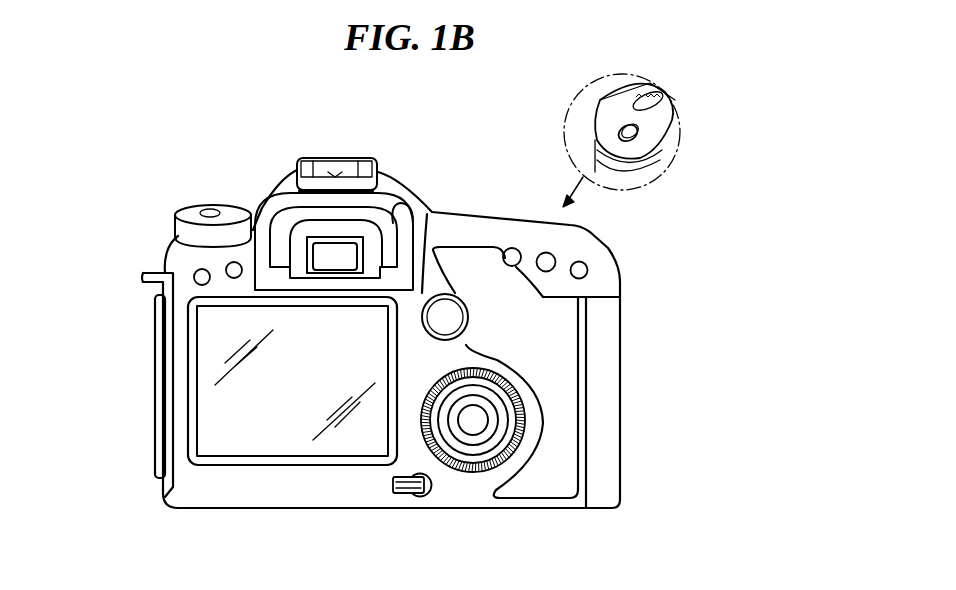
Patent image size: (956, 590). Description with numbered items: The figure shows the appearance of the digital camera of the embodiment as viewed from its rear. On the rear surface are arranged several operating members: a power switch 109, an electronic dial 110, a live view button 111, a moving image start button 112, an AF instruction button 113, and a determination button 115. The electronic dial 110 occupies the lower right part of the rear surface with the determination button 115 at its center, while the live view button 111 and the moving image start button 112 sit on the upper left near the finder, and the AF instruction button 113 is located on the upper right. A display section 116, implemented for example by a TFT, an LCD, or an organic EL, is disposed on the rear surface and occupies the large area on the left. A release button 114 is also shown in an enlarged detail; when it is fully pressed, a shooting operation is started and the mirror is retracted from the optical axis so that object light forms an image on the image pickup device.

The power switch 109 is at (418, 497).
The electronic dial 110 is at (478, 474).
The live view button 111 is at (202, 269).
The moving image start button 112 is at (234, 262).
The AF instruction button 113 is at (511, 248).
The release button 114 is at (637, 137).
The determination button 115 is at (473, 420).
The display section 116 is at (288, 437).